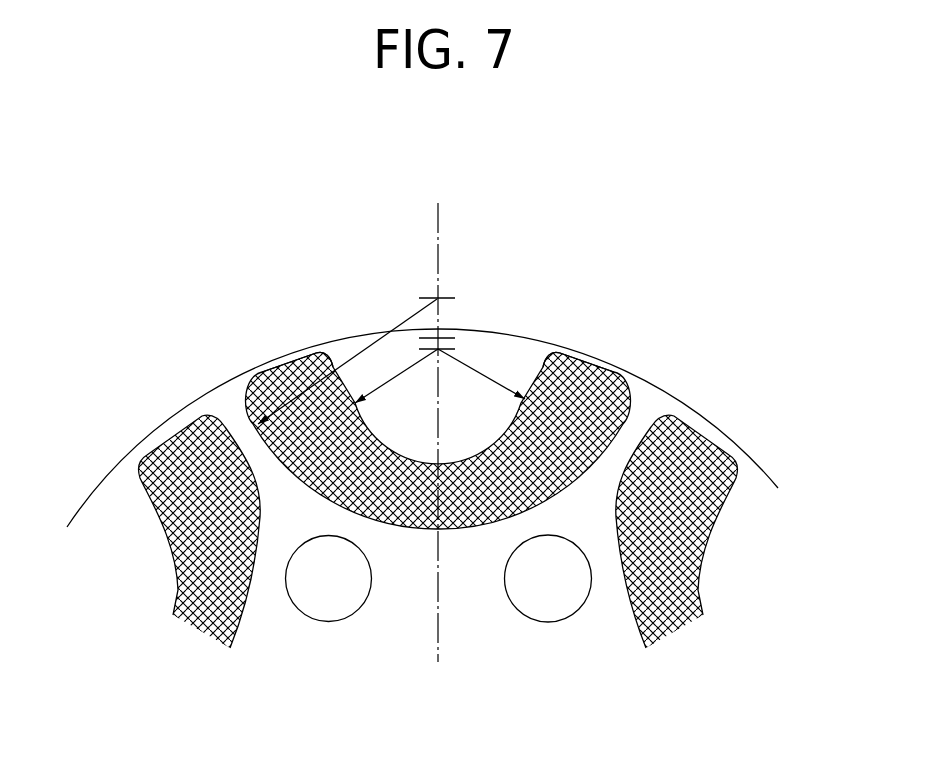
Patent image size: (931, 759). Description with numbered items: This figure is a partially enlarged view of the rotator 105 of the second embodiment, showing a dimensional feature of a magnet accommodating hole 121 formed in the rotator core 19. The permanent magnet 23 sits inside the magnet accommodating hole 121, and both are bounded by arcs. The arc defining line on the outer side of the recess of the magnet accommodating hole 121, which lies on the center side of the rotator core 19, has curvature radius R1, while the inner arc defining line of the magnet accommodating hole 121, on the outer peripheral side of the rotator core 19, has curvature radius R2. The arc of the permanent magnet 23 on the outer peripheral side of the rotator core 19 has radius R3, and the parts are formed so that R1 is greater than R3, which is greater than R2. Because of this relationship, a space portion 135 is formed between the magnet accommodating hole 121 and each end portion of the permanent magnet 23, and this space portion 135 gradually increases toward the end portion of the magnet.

The rotator 105 is at (152, 218).
The rotator core 19 is at (227, 397).
The permanent magnet 23 is at (283, 383).
The space portion 135 is at (322, 378).
The magnet accommodating hole 121 is at (545, 368).
The curvature radius of the outer arc defining line R1 is at (377, 340).
The curvature radius of the inner arc defining line R2 is at (480, 370).
The radius of the outer peripheral arc of the permanent magnet R3 is at (364, 397).